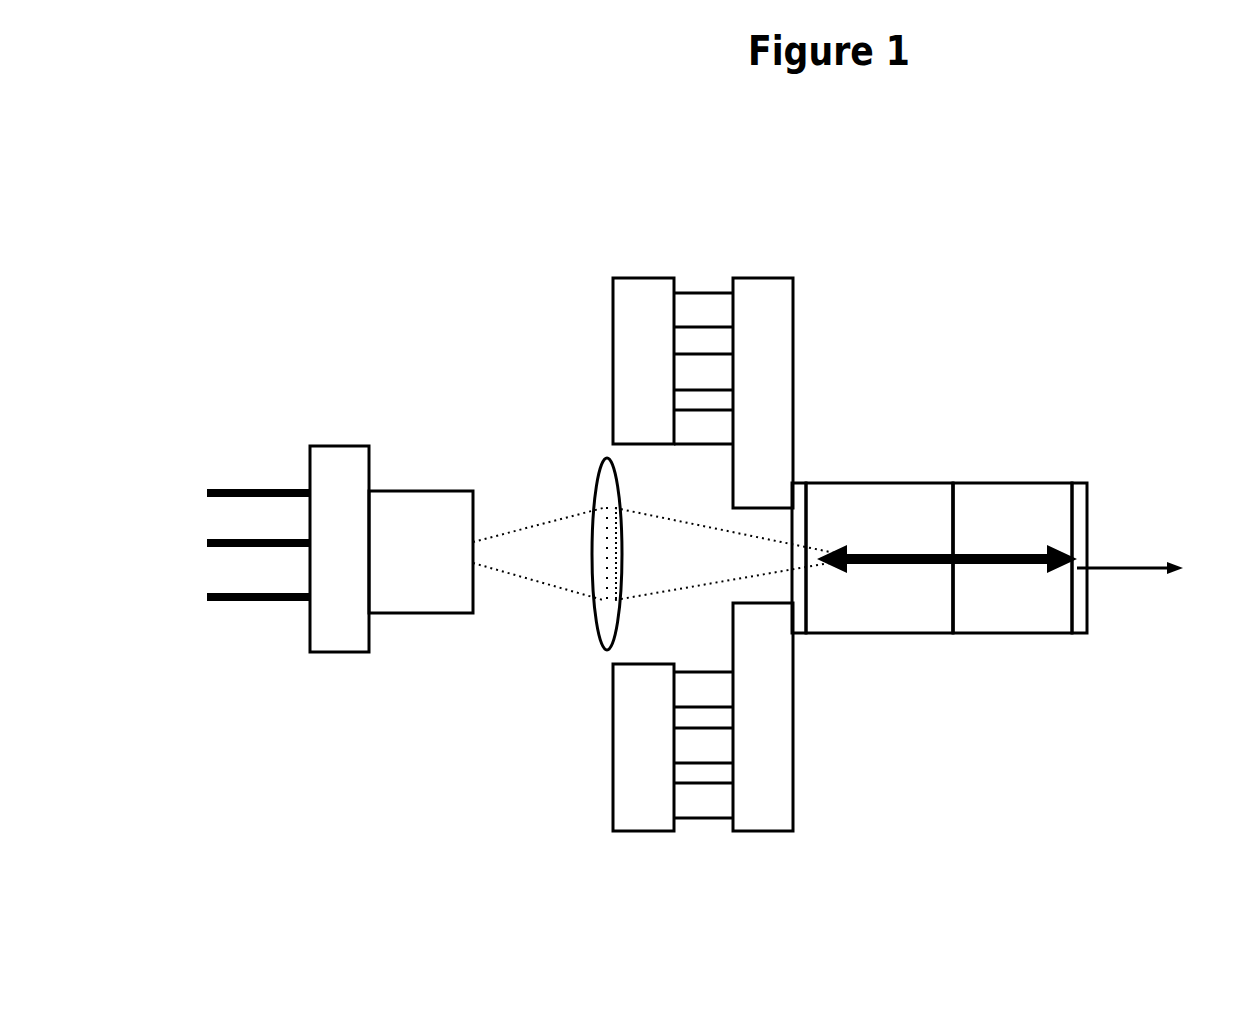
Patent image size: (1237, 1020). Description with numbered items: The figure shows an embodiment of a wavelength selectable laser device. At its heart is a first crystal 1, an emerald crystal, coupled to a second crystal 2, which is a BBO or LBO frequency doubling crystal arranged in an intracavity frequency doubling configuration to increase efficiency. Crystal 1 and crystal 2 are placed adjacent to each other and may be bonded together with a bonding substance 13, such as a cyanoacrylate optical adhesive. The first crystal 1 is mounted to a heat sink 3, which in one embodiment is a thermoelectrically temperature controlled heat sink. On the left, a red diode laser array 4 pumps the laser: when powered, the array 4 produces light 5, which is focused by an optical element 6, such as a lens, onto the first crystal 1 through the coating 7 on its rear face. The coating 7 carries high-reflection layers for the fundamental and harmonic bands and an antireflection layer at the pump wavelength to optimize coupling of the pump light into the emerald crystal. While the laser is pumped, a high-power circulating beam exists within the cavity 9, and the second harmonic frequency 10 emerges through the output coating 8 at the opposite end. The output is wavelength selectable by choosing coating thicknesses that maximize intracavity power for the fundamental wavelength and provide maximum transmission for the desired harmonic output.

The first crystal 1 is at (852, 625).
The second crystal 2 is at (968, 620).
The heat sink 3 is at (800, 813).
The laser diode array 4 is at (362, 658).
The light 5 is at (537, 590).
The optical element 6 is at (600, 458).
The rear face coating 7 is at (806, 478).
The output coating 8 is at (1090, 492).
The cavity 9 is at (870, 552).
The second harmonic frequency 10 is at (1156, 556).
The bonding substance 13 is at (955, 515).